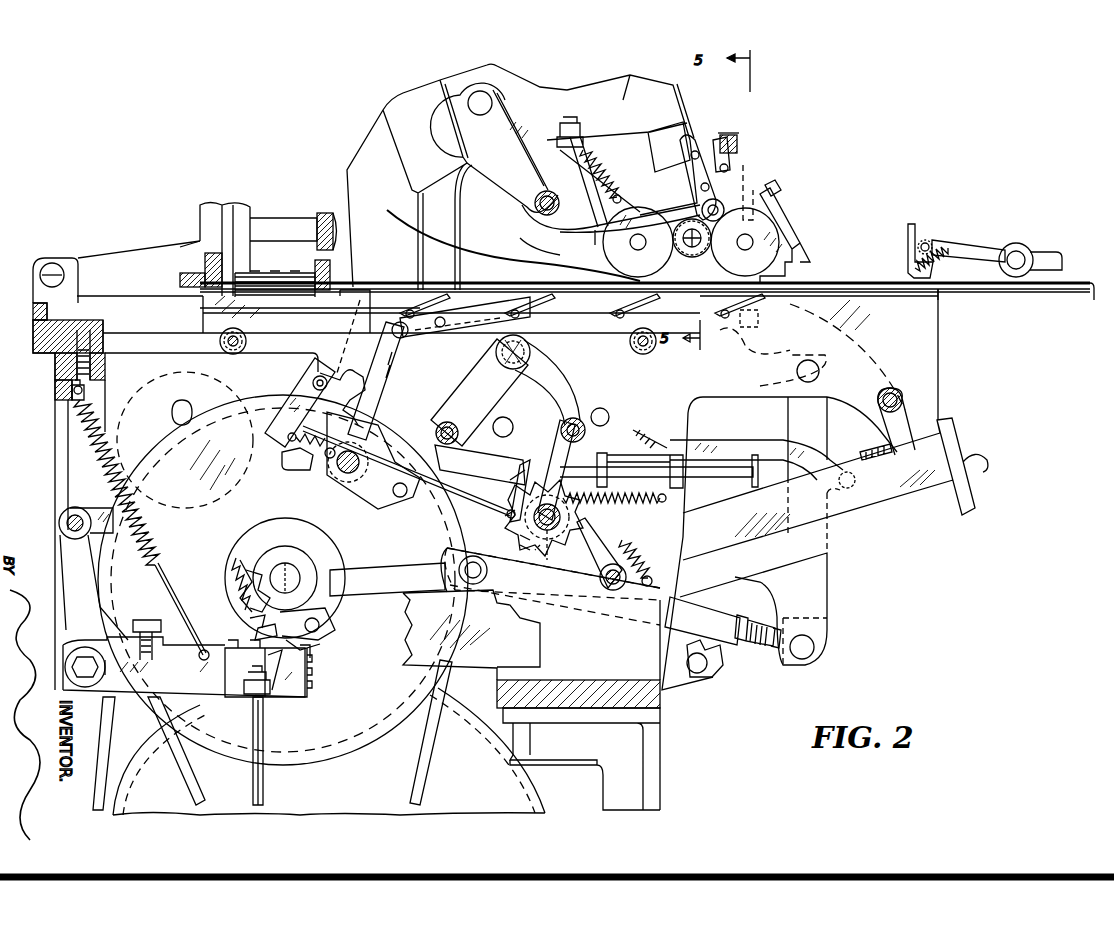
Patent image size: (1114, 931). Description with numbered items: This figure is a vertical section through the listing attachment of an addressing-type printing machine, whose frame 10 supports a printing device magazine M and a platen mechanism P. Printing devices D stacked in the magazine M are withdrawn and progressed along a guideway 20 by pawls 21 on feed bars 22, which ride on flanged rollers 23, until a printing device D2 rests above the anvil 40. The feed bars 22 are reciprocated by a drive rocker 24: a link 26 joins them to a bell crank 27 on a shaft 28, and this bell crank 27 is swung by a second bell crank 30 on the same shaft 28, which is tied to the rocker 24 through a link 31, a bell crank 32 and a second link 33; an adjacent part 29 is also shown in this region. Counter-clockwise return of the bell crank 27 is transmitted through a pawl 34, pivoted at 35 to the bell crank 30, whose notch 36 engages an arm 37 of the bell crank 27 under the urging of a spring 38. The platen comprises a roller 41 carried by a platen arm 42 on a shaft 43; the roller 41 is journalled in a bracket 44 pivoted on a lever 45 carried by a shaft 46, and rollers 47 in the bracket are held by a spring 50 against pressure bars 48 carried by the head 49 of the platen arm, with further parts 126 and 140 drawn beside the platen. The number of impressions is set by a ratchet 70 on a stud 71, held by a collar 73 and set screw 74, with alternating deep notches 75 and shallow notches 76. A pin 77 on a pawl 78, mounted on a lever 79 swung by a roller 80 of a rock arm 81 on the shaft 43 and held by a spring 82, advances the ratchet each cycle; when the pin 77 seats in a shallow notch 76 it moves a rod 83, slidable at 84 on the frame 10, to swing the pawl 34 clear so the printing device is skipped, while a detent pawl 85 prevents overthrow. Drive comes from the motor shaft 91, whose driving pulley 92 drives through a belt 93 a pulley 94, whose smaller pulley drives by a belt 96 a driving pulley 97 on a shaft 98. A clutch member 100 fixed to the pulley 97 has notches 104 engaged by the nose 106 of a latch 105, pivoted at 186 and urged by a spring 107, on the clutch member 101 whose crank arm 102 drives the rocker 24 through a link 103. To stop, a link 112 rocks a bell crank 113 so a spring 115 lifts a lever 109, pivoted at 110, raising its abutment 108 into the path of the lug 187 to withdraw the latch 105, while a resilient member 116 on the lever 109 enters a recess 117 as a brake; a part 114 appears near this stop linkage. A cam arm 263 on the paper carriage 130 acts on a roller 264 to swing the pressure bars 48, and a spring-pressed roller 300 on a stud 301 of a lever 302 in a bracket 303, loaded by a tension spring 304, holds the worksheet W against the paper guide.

The frame 10 is at (55, 338).
The guideway 20 is at (425, 295).
The pawls 21 is at (415, 292).
The feed bars 22 is at (286, 311).
The flanged rollers 23 is at (247, 341).
The drive rocker 24 is at (828, 606).
The link 26 is at (425, 333).
The bell crank 27 is at (392, 372).
The shaft 28 is at (345, 475).
The hook 29 is at (355, 388).
The bell crank 30 is at (372, 503).
The link 31 is at (438, 455).
The bell crank 32 is at (452, 404).
The second link 33 is at (748, 440).
The pawl 34 is at (305, 386).
The pivot 35 is at (312, 380).
The notch 36 is at (286, 437).
The arm 37 is at (283, 465).
The spring 38 is at (326, 460).
The anvil 40 is at (762, 318).
The platen roller 41 is at (725, 200).
The platen arm 42 is at (457, 177).
The shaft 43 is at (495, 357).
The bracket 44 is at (582, 205).
The lever 45 is at (515, 178).
The shaft 46 is at (480, 103).
The rollers 47 is at (722, 190).
The pressure bars 48 is at (640, 170).
The head 49 is at (690, 145).
The spring 50 is at (588, 176).
The ratchet 70 is at (520, 535).
The stud 71 is at (555, 554).
The collar 73 is at (570, 516).
The set screw 74 is at (570, 540).
The notches 75 is at (524, 542).
The notches 76 is at (543, 550).
The pin 77 is at (512, 515).
The pawl 78 is at (522, 468).
The lever 79 is at (540, 450).
The roller 80 is at (575, 415).
The rock arm 81 is at (565, 372).
The spring 82 is at (645, 502).
The rod 83 is at (500, 500).
The slide mounting 84 is at (300, 420).
The detent pawl 85 is at (608, 555).
The motor shaft 91 is at (181, 405).
The driving pulley 92 is at (200, 385).
The belt 93 is at (122, 425).
The pulley 94 is at (329, 751).
The driving belt 96 is at (185, 773).
The driving pulley 97 is at (283, 580).
The shaft 98 is at (278, 563).
The clutch member 100 is at (240, 603).
The clutch member 101 is at (298, 556).
The crank arm 102 is at (370, 556).
The link 103 is at (400, 580).
The notches 104 is at (245, 585).
The latch 105 is at (255, 635).
The nose 106 is at (250, 620).
The spring 107 is at (236, 572).
The movable abutment 108 is at (308, 660).
The lever 109 is at (187, 667).
The pivot 110 is at (85, 657).
The link 112 is at (96, 508).
The bell crank 113 is at (98, 597).
The bolt 114 is at (148, 620).
The spring 115 is at (142, 516).
The resilient member 116 is at (265, 668).
The recess 117 is at (283, 670).
The gear 126 is at (685, 238).
The paper carriage 130 is at (580, 248).
The roller 140 is at (803, 253).
The pivot 186 is at (322, 628).
The lug 187 is at (318, 645).
The cam arm 263 is at (792, 246).
The roller 264 is at (729, 133).
The spring-pressed roller 300 is at (1020, 252).
The stud 301 is at (1040, 256).
The lever 302 is at (980, 245).
The bracket 303 is at (910, 230).
The tension spring 304 is at (955, 242).
The printing device magazine M is at (243, 225).
The printing device D is at (250, 292).
The printing device D2 is at (868, 450).
The platen mechanism P is at (745, 242).
The worksheet W is at (535, 272).